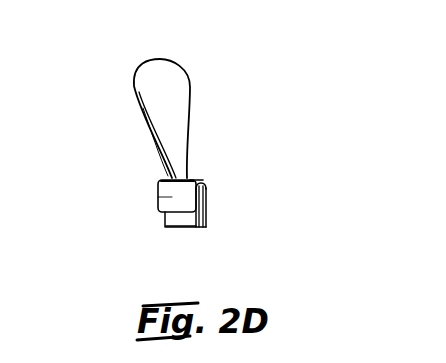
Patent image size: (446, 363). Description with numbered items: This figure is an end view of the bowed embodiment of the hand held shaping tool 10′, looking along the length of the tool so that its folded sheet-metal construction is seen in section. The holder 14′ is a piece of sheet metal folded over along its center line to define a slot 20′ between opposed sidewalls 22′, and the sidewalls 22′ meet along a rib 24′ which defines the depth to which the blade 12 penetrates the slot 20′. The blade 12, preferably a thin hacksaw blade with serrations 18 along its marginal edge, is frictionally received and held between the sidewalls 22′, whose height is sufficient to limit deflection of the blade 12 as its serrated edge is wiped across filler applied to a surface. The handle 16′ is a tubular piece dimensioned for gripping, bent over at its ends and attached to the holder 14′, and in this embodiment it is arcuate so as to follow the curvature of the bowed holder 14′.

The tool 10′ is at (128, 78).
The blade 12 is at (163, 222).
The holder 14′ is at (203, 178).
The handle 16′ is at (170, 63).
The serrations 18 is at (178, 228).
The slot 20′ is at (206, 185).
The sidewalls 22′ is at (206, 203).
The rib 24′ is at (163, 172).